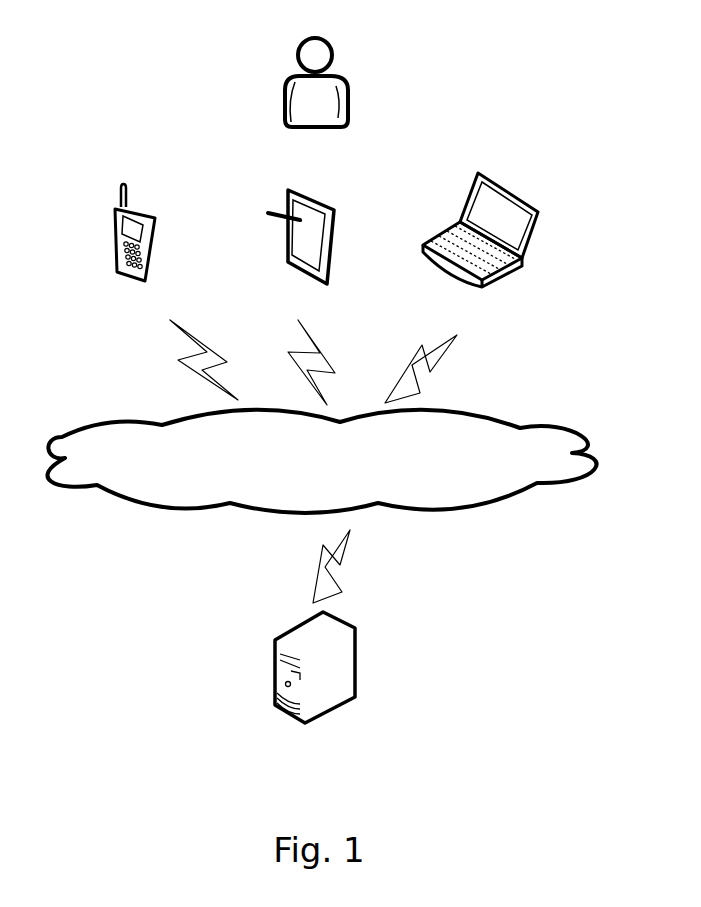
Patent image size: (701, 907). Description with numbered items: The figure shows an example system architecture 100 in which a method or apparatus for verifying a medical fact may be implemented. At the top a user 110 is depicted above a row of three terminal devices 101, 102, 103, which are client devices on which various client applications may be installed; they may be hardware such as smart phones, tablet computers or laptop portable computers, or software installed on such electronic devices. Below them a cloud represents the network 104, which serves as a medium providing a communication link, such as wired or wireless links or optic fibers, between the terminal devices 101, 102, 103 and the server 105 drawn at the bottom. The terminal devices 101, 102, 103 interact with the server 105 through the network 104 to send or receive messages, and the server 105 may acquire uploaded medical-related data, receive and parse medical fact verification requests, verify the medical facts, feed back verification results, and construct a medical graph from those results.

The system architecture 100 is at (509, 26).
The user 110 is at (316, 100).
The terminal device 101 is at (135, 249).
The terminal device 102 is at (301, 252).
The terminal device 103 is at (480, 244).
The network 104 is at (322, 461).
The server 105 is at (315, 687).